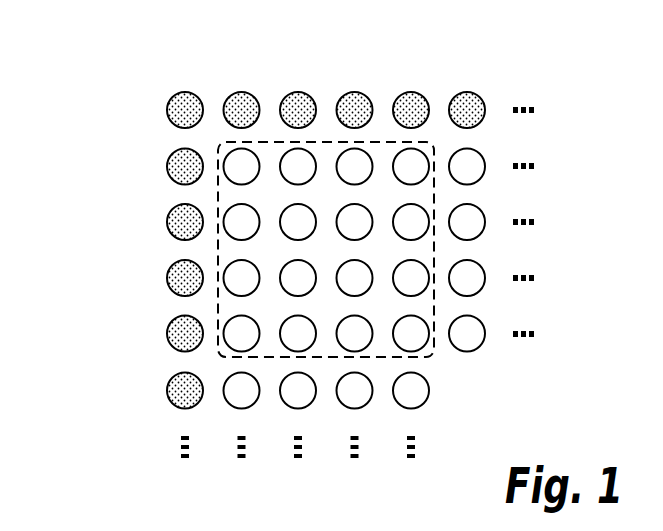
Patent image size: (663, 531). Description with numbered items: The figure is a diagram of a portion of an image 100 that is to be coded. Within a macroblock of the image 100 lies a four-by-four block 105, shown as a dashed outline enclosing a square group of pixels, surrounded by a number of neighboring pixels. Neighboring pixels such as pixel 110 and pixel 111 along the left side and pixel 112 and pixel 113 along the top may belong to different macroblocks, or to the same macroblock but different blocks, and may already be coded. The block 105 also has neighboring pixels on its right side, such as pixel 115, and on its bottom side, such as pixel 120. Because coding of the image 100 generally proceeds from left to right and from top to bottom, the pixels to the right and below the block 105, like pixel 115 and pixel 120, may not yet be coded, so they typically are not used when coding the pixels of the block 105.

The image 100 is at (104, 52).
The 4×4 block 105 is at (435, 259).
The pixel 110 is at (167, 222).
The pixel 111 is at (167, 279).
The pixel 112 is at (297, 91).
The pixel 113 is at (410, 91).
The pixel 115 is at (481, 152).
The pixel 120 is at (428, 392).